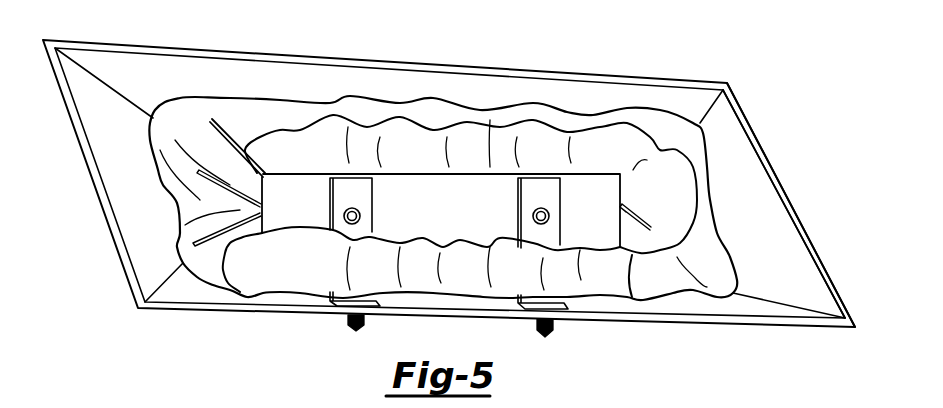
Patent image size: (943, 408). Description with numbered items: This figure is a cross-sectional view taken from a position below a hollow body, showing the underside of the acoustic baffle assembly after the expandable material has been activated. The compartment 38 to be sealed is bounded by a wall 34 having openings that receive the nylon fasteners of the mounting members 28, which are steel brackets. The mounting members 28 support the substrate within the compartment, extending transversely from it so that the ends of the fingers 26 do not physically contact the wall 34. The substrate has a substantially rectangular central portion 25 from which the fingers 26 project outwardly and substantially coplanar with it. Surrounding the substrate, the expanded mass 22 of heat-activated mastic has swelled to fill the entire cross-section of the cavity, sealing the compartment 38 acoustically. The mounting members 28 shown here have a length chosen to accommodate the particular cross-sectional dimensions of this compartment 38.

The expandable mass 22 is at (638, 117).
The central portion 25 is at (455, 220).
The fingers 26 is at (211, 122).
The mounting members 28 is at (330, 207).
The wall 34 is at (756, 191).
The compartment 38 is at (760, 121).